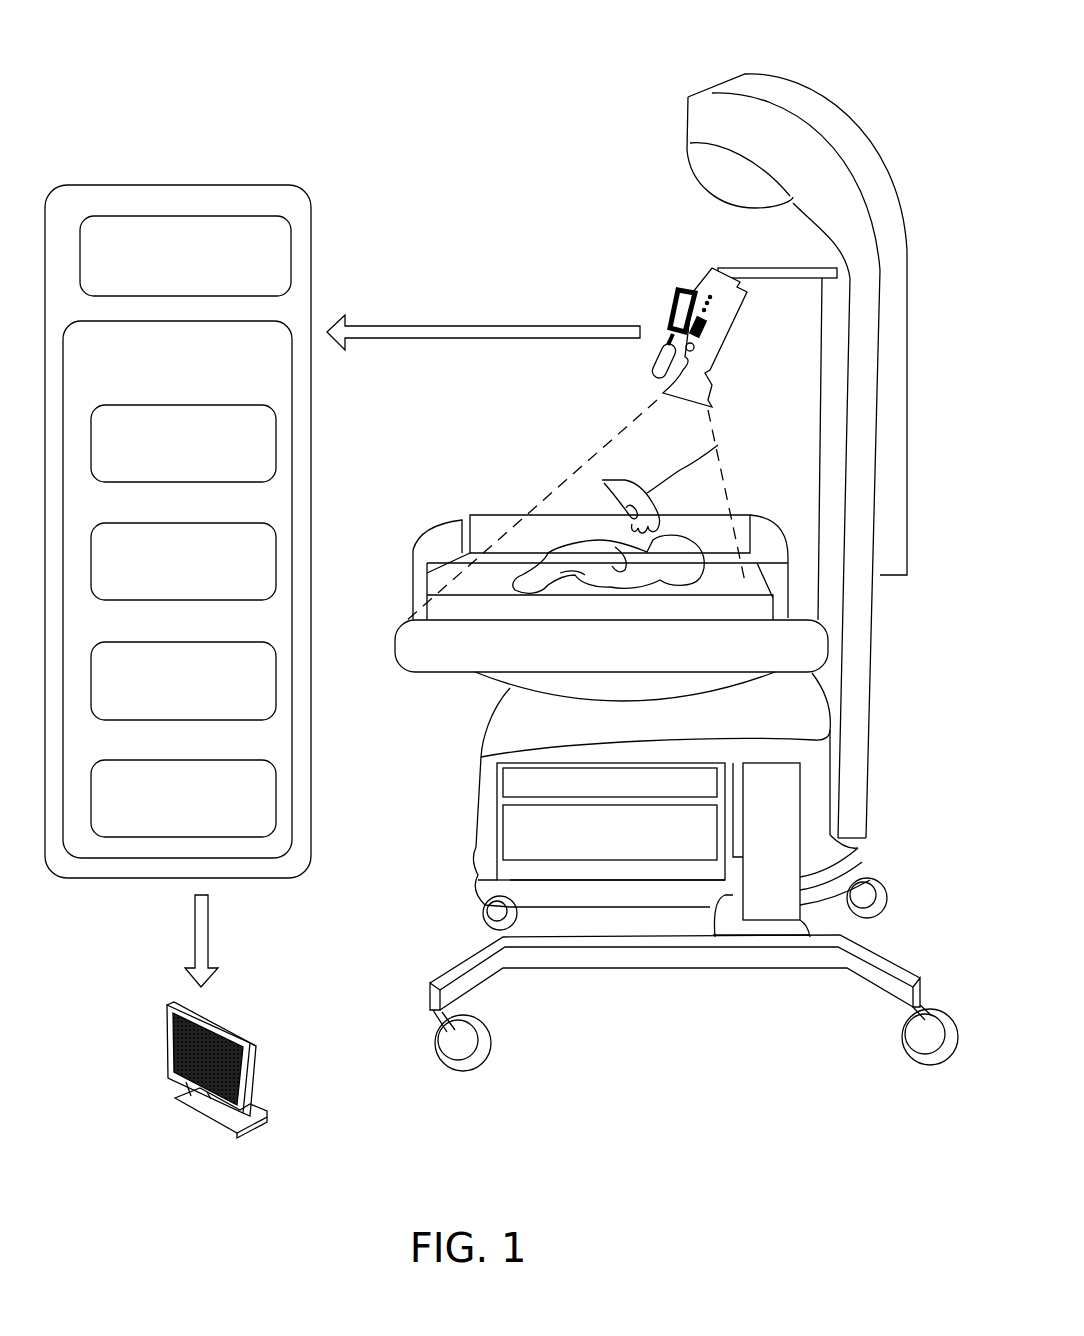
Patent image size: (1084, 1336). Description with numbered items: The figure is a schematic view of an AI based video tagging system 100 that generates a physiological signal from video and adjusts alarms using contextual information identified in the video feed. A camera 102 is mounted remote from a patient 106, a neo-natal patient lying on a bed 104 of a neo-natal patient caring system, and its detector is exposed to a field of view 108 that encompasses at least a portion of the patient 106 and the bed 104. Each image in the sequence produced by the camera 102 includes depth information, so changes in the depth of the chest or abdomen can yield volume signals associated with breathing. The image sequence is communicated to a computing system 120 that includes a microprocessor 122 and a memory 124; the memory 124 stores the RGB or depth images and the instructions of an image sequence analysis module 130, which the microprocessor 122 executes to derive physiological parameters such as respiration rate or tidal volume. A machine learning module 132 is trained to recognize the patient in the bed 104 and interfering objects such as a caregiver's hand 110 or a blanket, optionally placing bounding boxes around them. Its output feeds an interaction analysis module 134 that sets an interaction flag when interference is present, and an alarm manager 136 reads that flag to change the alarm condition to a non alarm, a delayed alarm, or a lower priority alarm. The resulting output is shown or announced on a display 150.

The AI based video tagging system 100 is at (152, 50).
The camera 102 is at (652, 286).
The bed 104 is at (485, 607).
The patient 106 is at (600, 527).
The field of view 108 is at (605, 453).
The caregiver's hand 110 is at (718, 447).
The computing system 120 is at (246, 531).
The microprocessor 122 is at (185, 256).
The memory 124 is at (177, 589).
The image sequence analysis module 130 is at (183, 443).
The machine learning module 132 is at (183, 561).
The interaction analysis module 134 is at (183, 681).
The alarm manager 136 is at (183, 798).
The display 150 is at (218, 1128).